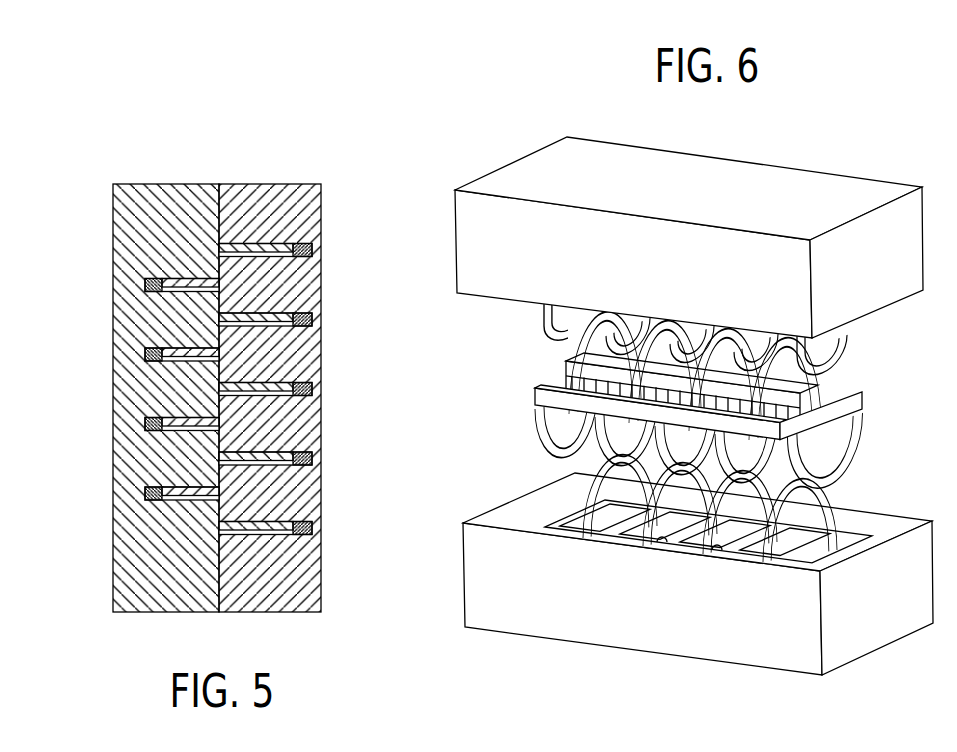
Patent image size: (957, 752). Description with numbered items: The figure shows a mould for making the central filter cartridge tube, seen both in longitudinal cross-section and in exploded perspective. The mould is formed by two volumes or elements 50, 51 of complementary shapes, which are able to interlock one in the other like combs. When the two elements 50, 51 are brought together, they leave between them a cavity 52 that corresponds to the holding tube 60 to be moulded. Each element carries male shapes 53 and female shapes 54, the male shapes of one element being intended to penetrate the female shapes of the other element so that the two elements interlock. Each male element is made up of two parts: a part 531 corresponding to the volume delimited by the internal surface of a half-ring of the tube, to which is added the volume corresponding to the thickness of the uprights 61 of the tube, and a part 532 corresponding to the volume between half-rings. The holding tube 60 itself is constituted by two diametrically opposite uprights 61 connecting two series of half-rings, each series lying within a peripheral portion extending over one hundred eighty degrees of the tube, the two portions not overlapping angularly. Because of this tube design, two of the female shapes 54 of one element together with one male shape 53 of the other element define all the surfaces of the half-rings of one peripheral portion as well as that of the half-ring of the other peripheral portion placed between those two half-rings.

In FIG. 5, the mould element 50 is at (170, 180).
In FIG. 6, the mould element 50 is at (769, 160).
In FIG. 5, the mould element 51 is at (287, 180).
In FIG. 6, the mould element 51 is at (706, 668).
In FIG. 5, the cavity 52 is at (313, 249).
In FIG. 6, the male shape 53 is at (818, 352).
In FIG. 6, the female shape 54 is at (663, 546).
In FIG. 6, the holding tube 60 is at (868, 444).
In FIG. 6, the upright 61 is at (600, 361).
In FIG. 6, the part of male element 531 is at (602, 497).
In FIG. 6, the part of male element 532 is at (566, 521).